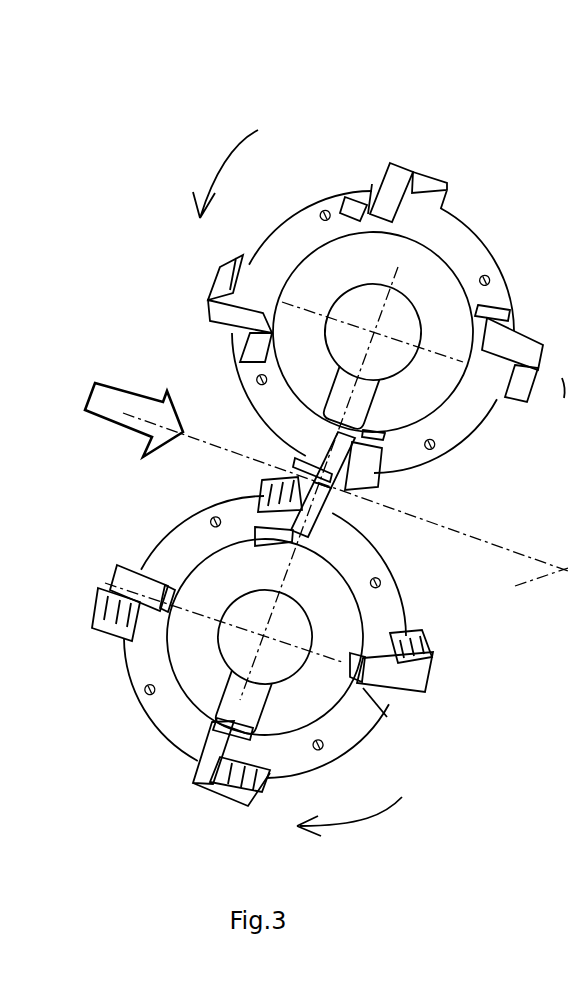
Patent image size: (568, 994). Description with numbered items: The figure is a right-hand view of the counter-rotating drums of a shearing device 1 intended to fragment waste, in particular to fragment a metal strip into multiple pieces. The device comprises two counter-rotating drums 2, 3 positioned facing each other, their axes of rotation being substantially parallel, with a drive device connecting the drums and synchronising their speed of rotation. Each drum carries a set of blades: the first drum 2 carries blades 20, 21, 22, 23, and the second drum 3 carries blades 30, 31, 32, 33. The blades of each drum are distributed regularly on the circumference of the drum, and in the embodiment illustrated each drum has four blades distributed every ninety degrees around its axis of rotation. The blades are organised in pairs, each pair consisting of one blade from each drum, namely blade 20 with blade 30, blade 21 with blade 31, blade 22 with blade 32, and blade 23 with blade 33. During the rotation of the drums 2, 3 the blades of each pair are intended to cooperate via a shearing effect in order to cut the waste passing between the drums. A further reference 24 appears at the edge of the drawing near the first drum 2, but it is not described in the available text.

The shearing device 1 is at (283, 111).
The drum 2 is at (292, 243).
The drum 3 is at (168, 718).
The blade 20 is at (357, 488).
The blade 21 is at (228, 312).
The blade 22 is at (395, 182).
The blade 23 is at (522, 348).
The cutter holder of upper roller 24 is at (560, 401).
The blade 30 is at (283, 468).
The blade 31 is at (120, 585).
The blade 32 is at (208, 777).
The blade 33 is at (405, 690).